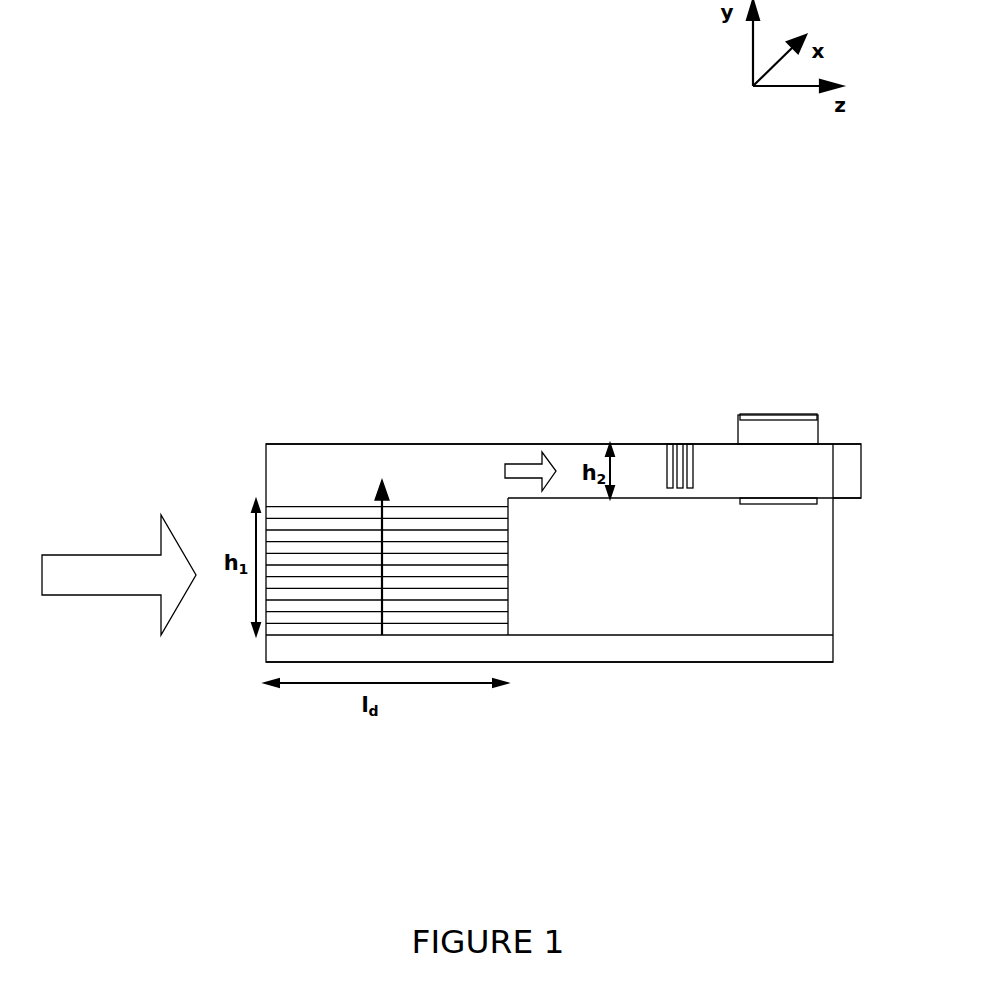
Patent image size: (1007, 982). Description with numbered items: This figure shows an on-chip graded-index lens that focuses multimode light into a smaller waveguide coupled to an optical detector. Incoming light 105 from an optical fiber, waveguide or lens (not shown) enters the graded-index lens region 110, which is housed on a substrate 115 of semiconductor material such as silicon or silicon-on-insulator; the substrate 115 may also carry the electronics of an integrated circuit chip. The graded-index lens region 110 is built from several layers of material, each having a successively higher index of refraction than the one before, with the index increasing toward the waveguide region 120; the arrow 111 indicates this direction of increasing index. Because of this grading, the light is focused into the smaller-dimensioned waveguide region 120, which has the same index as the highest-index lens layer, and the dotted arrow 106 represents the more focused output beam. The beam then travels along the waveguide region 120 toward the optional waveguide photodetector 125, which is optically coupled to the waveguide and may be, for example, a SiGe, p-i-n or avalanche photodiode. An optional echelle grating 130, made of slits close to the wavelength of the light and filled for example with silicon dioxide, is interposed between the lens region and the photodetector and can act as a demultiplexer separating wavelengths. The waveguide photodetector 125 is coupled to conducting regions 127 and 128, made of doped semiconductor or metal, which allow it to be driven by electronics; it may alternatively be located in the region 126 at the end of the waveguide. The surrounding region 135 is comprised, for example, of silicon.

The light 105 is at (93, 552).
The dotted arrow 106 is at (560, 460).
The graded-index lens region 110 is at (500, 566).
The arrow 111 is at (379, 484).
The substrate 115 is at (833, 647).
The waveguide region 120 is at (622, 455).
The waveguide photodetector 125 is at (818, 430).
The region 126 is at (861, 470).
The conducting region 127 is at (767, 412).
The conducting region 128 is at (740, 502).
The echelle grating 130 is at (682, 447).
The region 135 is at (833, 552).